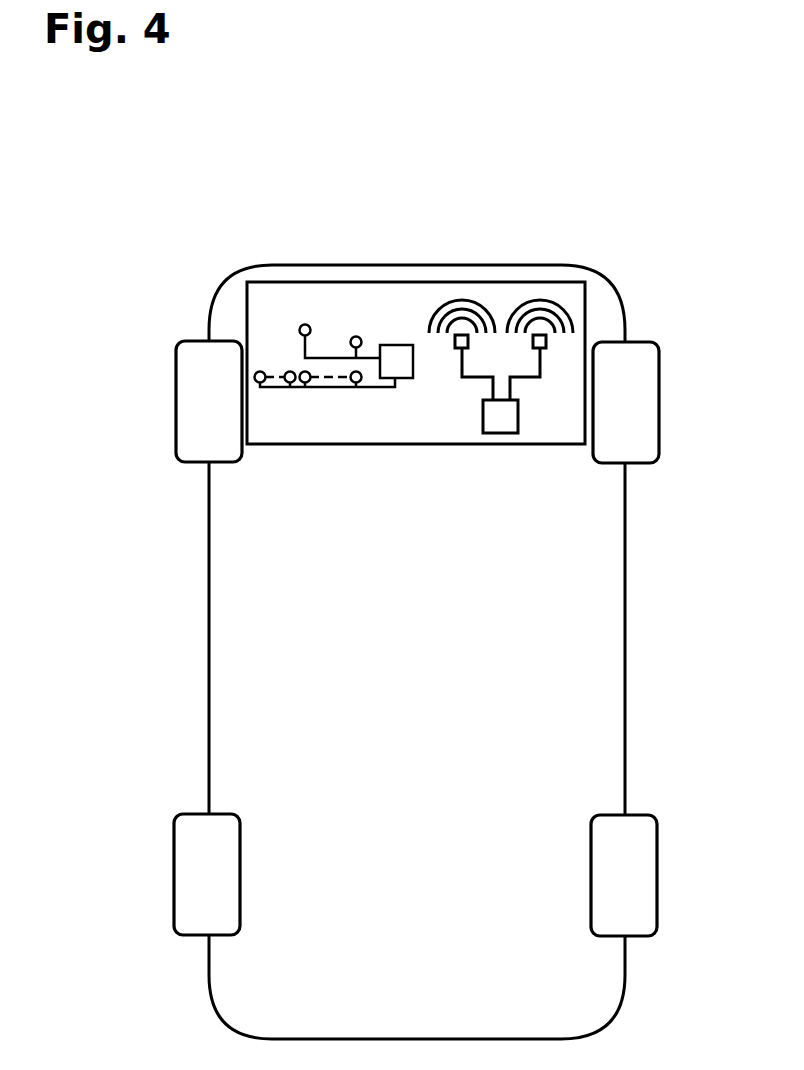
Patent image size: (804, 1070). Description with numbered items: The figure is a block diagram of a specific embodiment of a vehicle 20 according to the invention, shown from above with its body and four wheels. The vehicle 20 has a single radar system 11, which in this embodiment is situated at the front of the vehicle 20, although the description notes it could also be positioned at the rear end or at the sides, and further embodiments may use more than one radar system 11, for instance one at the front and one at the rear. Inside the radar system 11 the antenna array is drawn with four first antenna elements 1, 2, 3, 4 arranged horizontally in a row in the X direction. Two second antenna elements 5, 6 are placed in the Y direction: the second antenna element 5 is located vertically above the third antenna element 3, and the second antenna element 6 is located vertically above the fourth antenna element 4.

The first antenna element 1 is at (260, 391).
The first antenna element 2 is at (290, 391).
The first antenna element 3 is at (305, 391).
The first antenna element 4 is at (356, 391).
The second antenna element 5 is at (305, 322).
The second antenna element 6 is at (356, 334).
The radar system 11 is at (415, 445).
The vehicle 20 is at (625, 637).